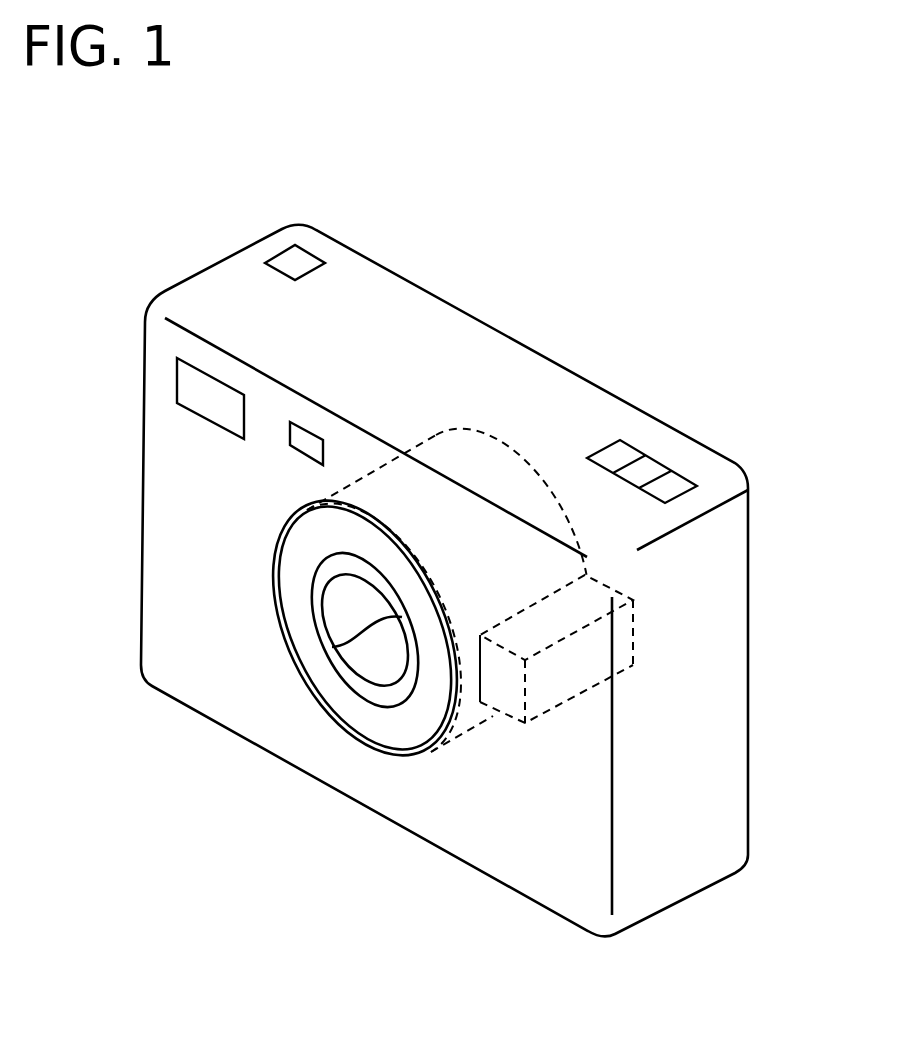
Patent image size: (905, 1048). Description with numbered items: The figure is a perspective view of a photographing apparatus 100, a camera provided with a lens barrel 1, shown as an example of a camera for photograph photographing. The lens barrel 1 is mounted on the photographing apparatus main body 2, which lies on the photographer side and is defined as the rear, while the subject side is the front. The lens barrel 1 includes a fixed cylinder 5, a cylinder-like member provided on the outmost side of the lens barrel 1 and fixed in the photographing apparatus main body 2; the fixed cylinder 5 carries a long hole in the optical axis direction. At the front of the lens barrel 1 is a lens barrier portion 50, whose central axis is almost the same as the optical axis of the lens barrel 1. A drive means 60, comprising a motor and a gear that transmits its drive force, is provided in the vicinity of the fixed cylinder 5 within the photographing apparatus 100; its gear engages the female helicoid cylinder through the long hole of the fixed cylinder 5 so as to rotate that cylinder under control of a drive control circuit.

The photographing apparatus 100 is at (483, 166).
The photographing apparatus main body 2 is at (142, 360).
The lens barrel 1 is at (255, 620).
The fixed cylinder 5 is at (487, 457).
The lens barrier portion 50 is at (373, 725).
The drive means 60 is at (622, 638).